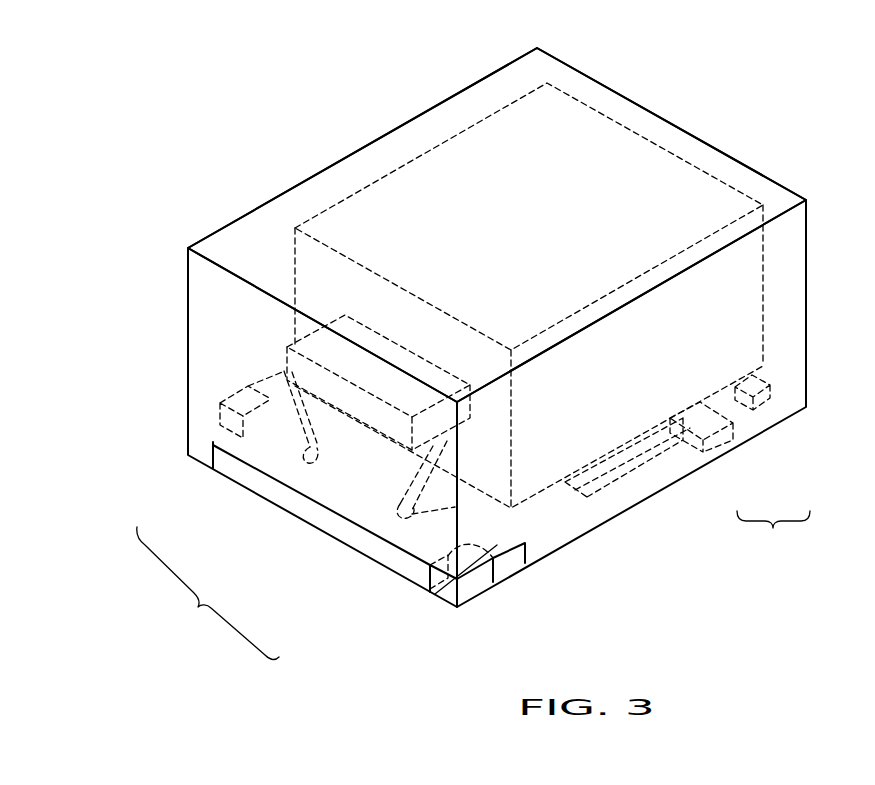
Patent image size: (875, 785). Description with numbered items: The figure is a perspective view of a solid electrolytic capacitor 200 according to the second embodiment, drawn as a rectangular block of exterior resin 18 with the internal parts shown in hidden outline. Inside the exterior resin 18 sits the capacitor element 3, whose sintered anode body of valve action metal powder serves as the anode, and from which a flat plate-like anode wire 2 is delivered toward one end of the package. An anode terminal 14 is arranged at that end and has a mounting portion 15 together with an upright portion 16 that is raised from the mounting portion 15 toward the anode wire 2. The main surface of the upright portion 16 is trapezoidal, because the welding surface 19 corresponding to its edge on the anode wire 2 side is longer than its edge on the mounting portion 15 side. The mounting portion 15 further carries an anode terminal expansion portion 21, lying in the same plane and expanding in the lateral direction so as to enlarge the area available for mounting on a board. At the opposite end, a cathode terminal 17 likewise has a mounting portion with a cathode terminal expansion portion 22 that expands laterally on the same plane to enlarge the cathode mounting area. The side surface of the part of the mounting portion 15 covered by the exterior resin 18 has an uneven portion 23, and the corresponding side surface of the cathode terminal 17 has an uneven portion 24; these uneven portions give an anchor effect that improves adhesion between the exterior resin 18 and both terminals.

The solid electrolytic capacitor 200 is at (735, 127).
The exterior resin 18 is at (352, 177).
The capacitor element 3 is at (570, 152).
The anode wire 2 is at (318, 377).
The anode terminal 14 is at (208, 593).
The mounting portion 15 is at (240, 441).
The upright portion 16 is at (317, 447).
The welding surface 19 is at (430, 447).
The anode terminal expansion portion 21 is at (437, 596).
The uneven portion 23 is at (425, 564).
The cathode terminal 17 is at (773, 533).
The cathode terminal expansion portion 22 is at (732, 407).
The uneven portion 24 is at (763, 398).